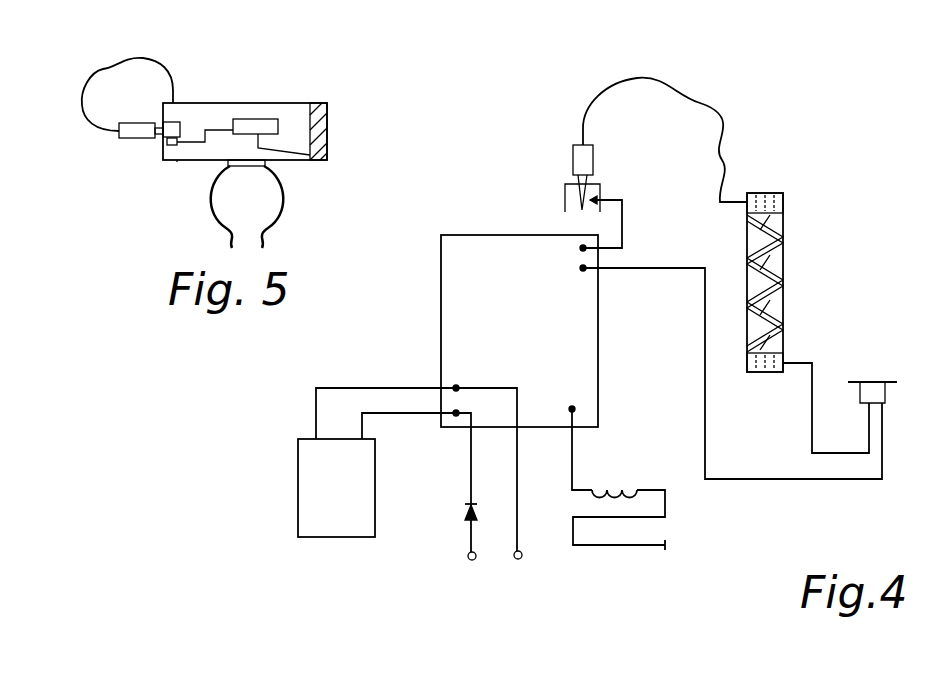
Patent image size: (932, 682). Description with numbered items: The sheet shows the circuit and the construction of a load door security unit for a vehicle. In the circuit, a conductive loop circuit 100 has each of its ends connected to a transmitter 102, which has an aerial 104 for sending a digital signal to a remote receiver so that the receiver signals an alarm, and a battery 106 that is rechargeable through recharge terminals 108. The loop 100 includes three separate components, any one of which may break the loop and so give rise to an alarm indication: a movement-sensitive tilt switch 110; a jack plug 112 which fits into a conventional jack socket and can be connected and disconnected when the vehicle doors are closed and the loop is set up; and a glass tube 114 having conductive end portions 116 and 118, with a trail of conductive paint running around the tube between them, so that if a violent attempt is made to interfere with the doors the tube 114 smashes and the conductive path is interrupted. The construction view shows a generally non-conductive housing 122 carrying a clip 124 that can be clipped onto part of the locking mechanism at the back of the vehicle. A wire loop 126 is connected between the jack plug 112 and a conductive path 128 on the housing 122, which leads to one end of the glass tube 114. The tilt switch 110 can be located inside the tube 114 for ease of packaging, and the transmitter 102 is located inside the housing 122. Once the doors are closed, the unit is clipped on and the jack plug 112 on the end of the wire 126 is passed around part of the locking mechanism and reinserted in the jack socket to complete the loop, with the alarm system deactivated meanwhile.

In FIG. 4, the conductive loop circuit 100 is at (726, 124).
In FIG. 5, the transmitter 102 is at (265, 127).
In FIG. 4, the transmitter 102 is at (519, 331).
In FIG. 4, the aerial 104 is at (615, 546).
In FIG. 4, the battery 106 is at (336, 488).
In FIG. 4, the recharge terminals 108 is at (514, 558).
In FIG. 4, the movement-sensitive tilt switch 110 is at (885, 393).
In FIG. 5, the jack plug 112 is at (138, 135).
In FIG. 4, the jack plug 112 is at (572, 163).
In FIG. 5, the glass tube 114 is at (330, 140).
In FIG. 4, the glass tube 114 is at (783, 260).
In FIG. 4, the conductive end portion 116 is at (783, 202).
In FIG. 4, the conductive end portion 118 is at (768, 372).
In FIG. 5, the housing 122 is at (177, 160).
In FIG. 5, the clip 124 is at (283, 200).
In FIG. 5, the wire loop 126 is at (103, 69).
In FIG. 5, the conductive path 128 is at (245, 103).